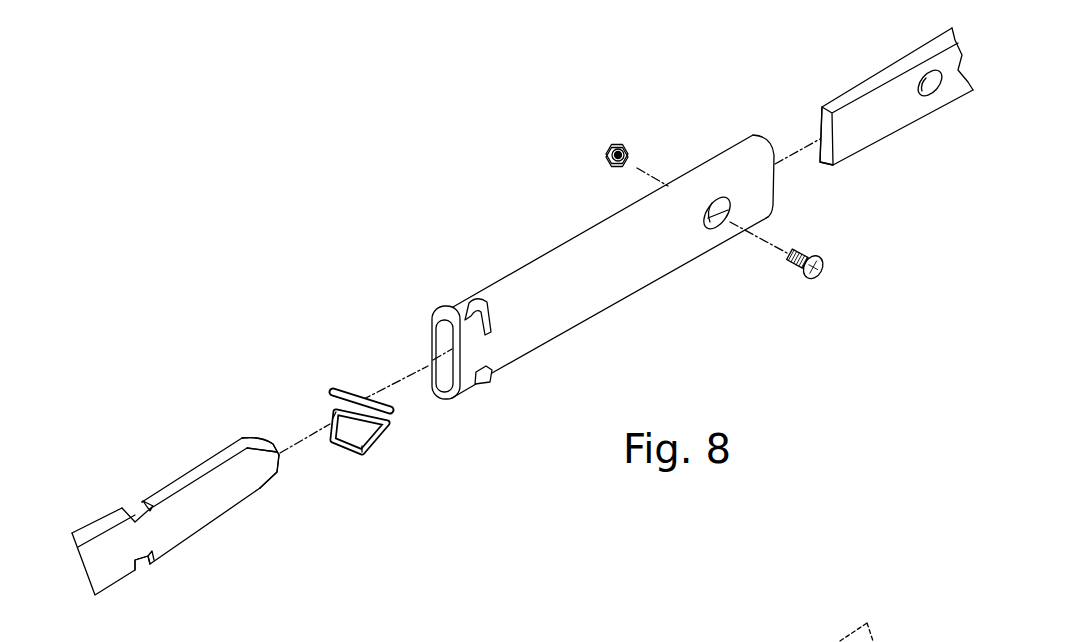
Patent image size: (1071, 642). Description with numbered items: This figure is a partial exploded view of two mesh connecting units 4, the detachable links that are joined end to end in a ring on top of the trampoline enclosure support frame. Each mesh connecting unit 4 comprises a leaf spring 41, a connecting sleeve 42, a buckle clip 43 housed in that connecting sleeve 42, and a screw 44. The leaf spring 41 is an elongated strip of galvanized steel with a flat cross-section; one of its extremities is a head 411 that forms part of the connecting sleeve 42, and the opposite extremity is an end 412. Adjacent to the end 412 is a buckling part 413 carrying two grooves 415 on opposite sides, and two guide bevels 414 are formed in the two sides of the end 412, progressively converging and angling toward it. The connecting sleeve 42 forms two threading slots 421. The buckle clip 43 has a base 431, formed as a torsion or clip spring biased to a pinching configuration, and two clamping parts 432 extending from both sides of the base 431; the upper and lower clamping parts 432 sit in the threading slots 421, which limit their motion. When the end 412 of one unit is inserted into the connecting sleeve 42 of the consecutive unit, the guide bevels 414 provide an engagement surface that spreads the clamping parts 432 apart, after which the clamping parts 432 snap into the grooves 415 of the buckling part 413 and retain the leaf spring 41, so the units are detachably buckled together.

The mesh connecting unit 4 is at (710, 140).
The leaf spring 41 is at (858, 82).
The head 411 is at (823, 163).
The end 412 is at (282, 467).
The buckling part 413 is at (133, 505).
The guide bevels 414 is at (254, 438).
The grooves 415 is at (142, 565).
The connecting sleeve 42 is at (537, 256).
The threading slots 421 is at (478, 312).
The buckle clip 43 is at (384, 440).
The base 431 is at (366, 390).
The clamping parts 432 is at (330, 402).
The screw 44 is at (813, 290).